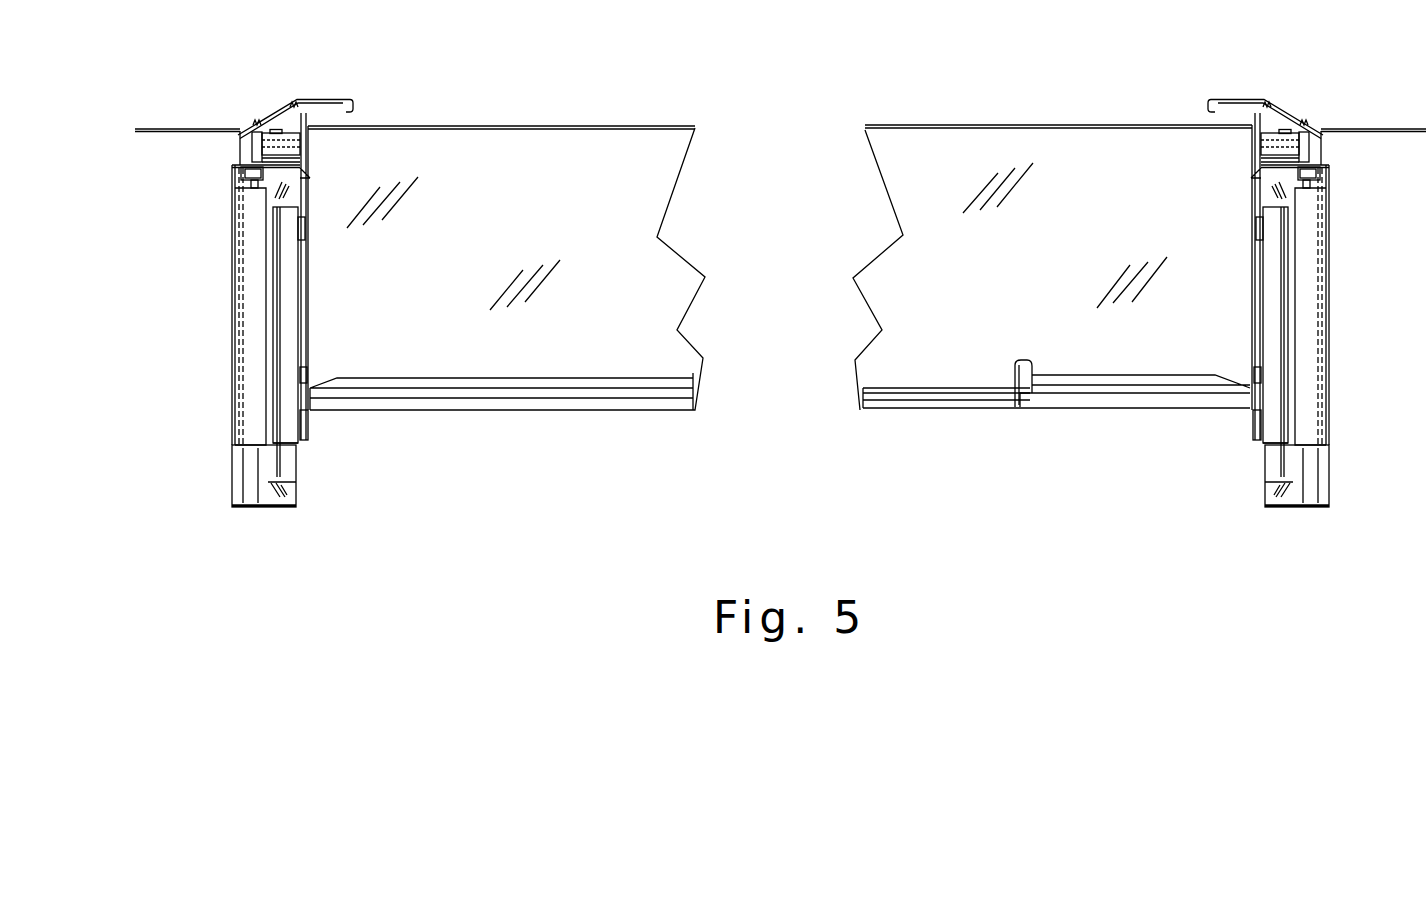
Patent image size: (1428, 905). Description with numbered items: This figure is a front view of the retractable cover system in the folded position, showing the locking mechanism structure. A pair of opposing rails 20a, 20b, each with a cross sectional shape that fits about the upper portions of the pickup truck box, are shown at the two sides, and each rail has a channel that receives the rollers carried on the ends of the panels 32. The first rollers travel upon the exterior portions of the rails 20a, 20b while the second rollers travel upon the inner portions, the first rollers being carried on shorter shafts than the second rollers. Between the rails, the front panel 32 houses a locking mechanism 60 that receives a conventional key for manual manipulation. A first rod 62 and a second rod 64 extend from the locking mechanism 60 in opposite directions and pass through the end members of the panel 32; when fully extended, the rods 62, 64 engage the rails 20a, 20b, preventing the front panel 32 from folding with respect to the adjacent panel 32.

The rail 20a is at (1378, 127).
The rail 20b is at (163, 127).
The panel 32 is at (928, 147).
The locking mechanism 60 is at (1021, 375).
The first rod 62 is at (1098, 380).
The second rod 64 is at (918, 390).